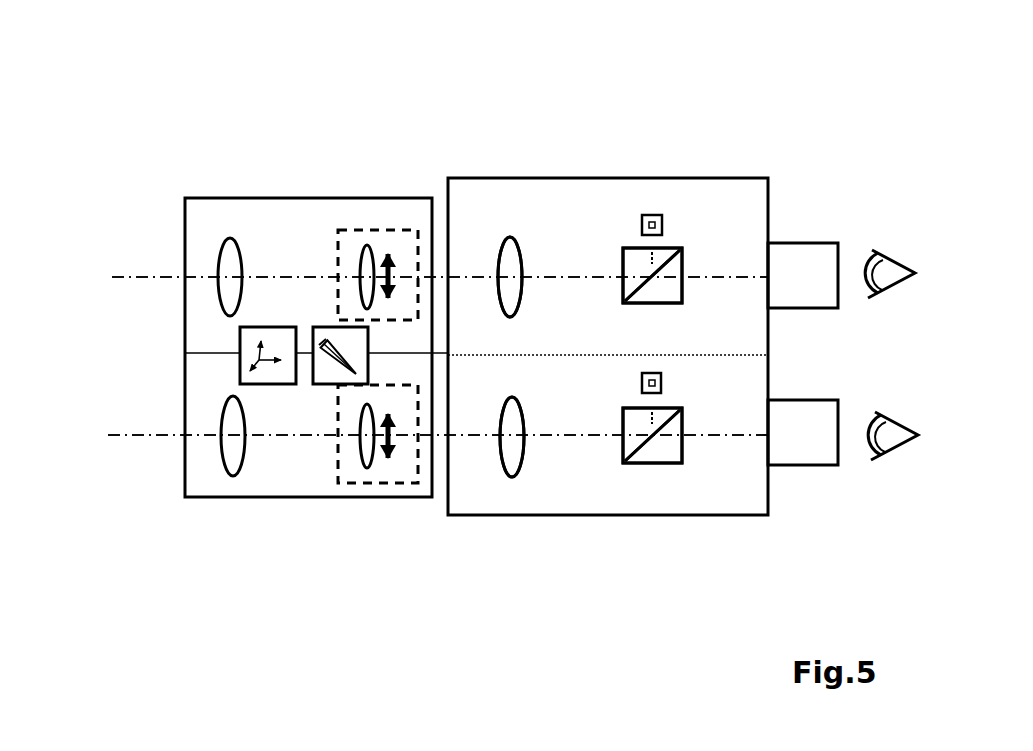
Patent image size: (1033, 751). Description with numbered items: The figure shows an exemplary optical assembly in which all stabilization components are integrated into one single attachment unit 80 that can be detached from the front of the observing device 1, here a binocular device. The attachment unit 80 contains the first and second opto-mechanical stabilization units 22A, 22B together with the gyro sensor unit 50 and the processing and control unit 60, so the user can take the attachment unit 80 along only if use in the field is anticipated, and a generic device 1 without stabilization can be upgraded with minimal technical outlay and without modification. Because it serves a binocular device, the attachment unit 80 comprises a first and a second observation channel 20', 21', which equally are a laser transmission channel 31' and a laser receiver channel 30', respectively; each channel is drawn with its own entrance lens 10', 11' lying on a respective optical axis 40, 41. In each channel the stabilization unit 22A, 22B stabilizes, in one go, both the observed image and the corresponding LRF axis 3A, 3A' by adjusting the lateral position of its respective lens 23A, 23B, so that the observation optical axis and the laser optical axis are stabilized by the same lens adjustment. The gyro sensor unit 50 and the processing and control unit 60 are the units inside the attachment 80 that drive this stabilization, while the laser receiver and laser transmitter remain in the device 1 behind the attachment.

The device 1 is at (238, 115).
The attachment unit 80 is at (212, 195).
The upper objective lens 10' is at (267, 214).
The lower objective lens 11' is at (270, 502).
The first observation channel 20' is at (376, 242).
The laser receiver channel 30' is at (410, 242).
The second observation channel 21' is at (367, 495).
The laser transmission channel 31' is at (401, 483).
The upper optical axis 40 is at (152, 278).
The LRF axis 3A is at (435, 320).
The lower optical axis 41 is at (142, 433).
The LRF axis 3A' is at (435, 410).
The first opto-mechanical stabilization unit 22A is at (347, 235).
The lens 23A is at (365, 245).
The second opto-mechanical stabilization unit 22B is at (345, 472).
The lens 23B is at (362, 453).
The gyro sensor unit 50 is at (353, 343).
The processing and control unit 60 is at (271, 374).